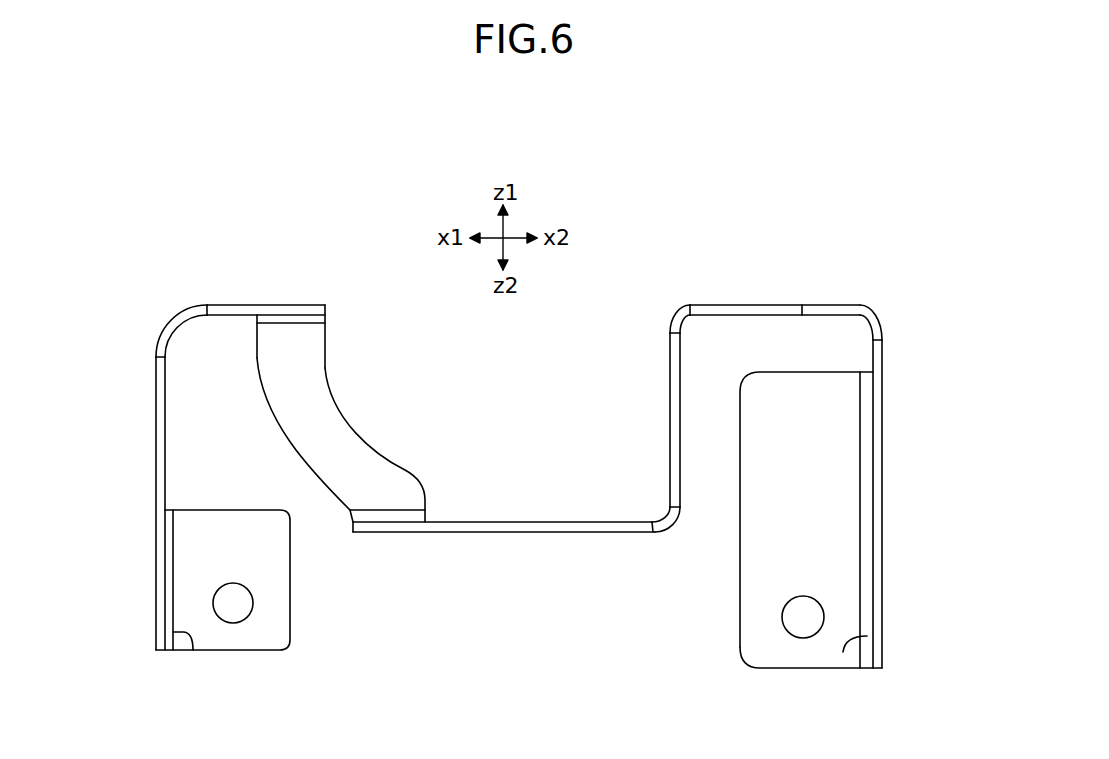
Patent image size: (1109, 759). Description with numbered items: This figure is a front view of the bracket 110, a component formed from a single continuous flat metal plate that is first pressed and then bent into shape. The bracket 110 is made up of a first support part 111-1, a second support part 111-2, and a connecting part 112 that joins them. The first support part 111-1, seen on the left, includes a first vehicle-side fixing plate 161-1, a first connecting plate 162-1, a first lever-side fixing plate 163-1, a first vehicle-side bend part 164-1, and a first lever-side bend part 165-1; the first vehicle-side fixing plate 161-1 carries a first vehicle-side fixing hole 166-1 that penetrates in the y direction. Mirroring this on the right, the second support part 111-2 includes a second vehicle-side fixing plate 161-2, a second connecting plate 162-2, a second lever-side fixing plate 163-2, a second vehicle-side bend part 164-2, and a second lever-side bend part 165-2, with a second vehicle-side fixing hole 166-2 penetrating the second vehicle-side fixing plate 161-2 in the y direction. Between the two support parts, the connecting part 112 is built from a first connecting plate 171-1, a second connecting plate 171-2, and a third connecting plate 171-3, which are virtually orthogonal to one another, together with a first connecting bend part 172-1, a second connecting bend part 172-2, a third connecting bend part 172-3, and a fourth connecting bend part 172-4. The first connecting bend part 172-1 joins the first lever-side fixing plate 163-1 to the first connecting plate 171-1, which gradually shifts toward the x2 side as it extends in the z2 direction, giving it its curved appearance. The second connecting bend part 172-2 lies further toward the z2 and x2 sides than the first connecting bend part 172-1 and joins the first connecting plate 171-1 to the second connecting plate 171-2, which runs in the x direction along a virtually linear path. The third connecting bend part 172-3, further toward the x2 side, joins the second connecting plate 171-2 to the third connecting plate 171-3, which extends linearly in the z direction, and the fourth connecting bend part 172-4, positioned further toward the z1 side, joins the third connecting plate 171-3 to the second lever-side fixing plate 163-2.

The bracket 110 is at (318, 237).
The first support part 111-1 is at (275, 627).
The second support part 111-2 is at (755, 612).
The connecting part 112 is at (465, 531).
The first vehicle-side fixing plate 161-1 is at (202, 532).
The second vehicle-side fixing plate 161-2 is at (832, 560).
The first connecting plate 162-1 is at (160, 425).
The second connecting plate 162-2 is at (877, 450).
The first lever-side fixing plate 163-1 is at (232, 307).
The second lever-side fixing plate 163-2 is at (828, 308).
The first vehicle-side bend part 164-1 is at (192, 652).
The second vehicle-side bend part 164-2 is at (843, 652).
The first lever-side bend part 165-1 is at (173, 325).
The second lever-side bend part 165-2 is at (872, 320).
The first vehicle-side fixing hole 166-1 is at (233, 608).
The second vehicle-side fixing hole 166-2 is at (807, 627).
The first connecting plate 171-1 is at (298, 430).
The second connecting plate 171-2 is at (527, 525).
The third connecting plate 171-3 is at (670, 418).
The first connecting bend part 172-1 is at (252, 323).
The second connecting bend part 172-2 is at (385, 515).
The third connecting bend part 172-3 is at (675, 522).
The fourth connecting bend part 172-4 is at (678, 317).